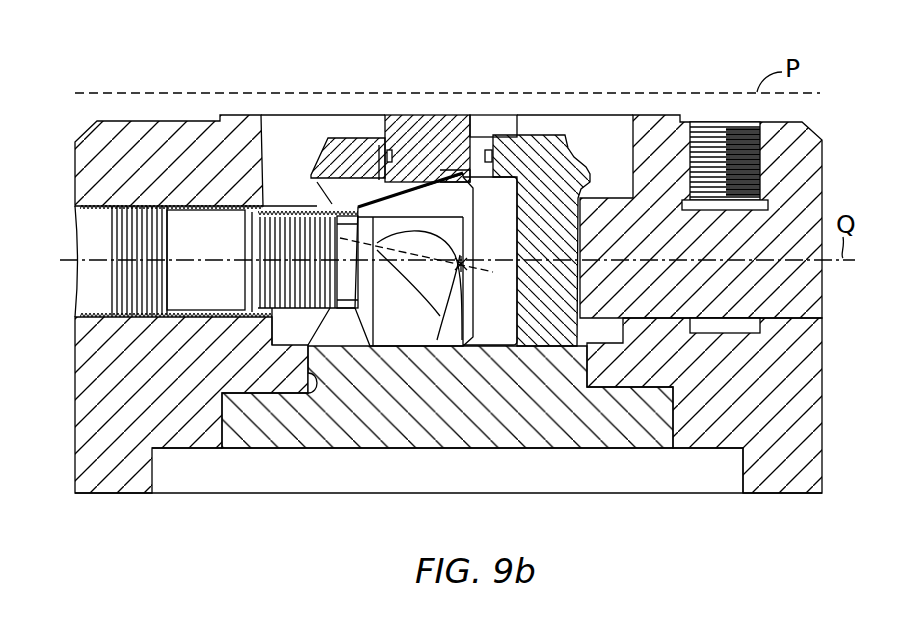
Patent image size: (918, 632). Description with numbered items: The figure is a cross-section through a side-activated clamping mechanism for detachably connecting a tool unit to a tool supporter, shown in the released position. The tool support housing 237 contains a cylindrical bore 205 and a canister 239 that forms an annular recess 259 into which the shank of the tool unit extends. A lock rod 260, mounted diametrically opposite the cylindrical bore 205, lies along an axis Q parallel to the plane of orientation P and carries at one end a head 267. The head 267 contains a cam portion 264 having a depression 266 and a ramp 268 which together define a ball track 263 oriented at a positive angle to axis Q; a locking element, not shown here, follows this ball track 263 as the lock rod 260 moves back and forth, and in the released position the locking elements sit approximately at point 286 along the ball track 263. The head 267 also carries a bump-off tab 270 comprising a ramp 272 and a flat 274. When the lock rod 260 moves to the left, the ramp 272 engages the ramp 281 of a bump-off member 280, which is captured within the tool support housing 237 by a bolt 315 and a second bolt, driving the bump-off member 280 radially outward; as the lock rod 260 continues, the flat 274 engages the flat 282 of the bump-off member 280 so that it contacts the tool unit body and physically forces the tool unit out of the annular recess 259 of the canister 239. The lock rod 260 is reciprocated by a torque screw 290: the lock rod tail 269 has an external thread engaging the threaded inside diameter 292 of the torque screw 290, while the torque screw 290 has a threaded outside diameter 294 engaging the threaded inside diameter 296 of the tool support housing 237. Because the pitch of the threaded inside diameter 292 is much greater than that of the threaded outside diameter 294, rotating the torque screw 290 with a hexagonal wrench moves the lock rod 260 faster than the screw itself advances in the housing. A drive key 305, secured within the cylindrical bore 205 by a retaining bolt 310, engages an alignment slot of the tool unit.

The cylindrical bore 205 is at (815, 312).
The tool support housing 237 is at (73, 177).
The canister 239 is at (352, 143).
The annular recess 259 is at (283, 135).
The lock rod 260 is at (387, 312).
The ball track 263 is at (490, 273).
The cam portion 264 is at (414, 272).
The depression 266 is at (452, 335).
The head 267 is at (380, 320).
The ramp 268 is at (443, 290).
The lock rod tail 269 is at (288, 222).
The bump-off tab 270 is at (460, 207).
The ramp 272 is at (378, 185).
The flat 274 is at (445, 172).
The bump-off member 280 is at (411, 125).
The ramp 281 is at (462, 178).
The flat 282 is at (376, 150).
The point 286 is at (472, 268).
The torque screw 290 is at (223, 248).
The threaded inside diameter 292 is at (257, 287).
The threaded outside diameter 294 is at (112, 278).
The threaded inside diameter 296 is at (125, 300).
The drive key 305 is at (807, 218).
The retaining bolt 310 is at (715, 138).
The bolt 315 is at (482, 150).